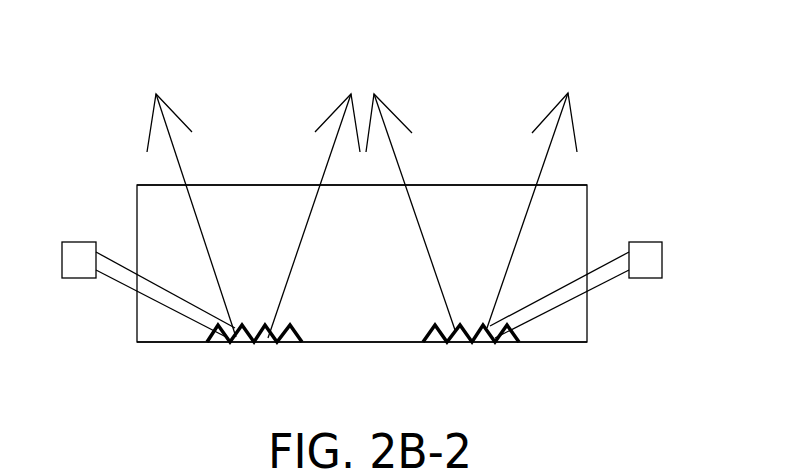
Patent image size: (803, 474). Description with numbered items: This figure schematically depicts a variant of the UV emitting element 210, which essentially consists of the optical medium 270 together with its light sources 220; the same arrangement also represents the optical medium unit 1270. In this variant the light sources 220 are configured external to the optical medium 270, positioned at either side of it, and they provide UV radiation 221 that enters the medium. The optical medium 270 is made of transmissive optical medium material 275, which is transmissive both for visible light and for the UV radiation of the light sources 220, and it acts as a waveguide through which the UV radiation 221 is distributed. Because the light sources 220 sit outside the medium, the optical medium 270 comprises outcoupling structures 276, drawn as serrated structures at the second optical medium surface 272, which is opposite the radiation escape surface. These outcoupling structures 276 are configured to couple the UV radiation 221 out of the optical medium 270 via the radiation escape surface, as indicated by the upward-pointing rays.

The optical medium unit 1270 is at (606, 76).
The UV emitting element 210 is at (120, 118).
The UV radiation 221 is at (575, 122).
The transmissive optical medium material 275 is at (473, 202).
The optical medium 270 is at (588, 213).
The light sources 220 is at (80, 280).
The outcoupling structures 276 is at (253, 342).
The second optical medium surface 272 is at (373, 342).